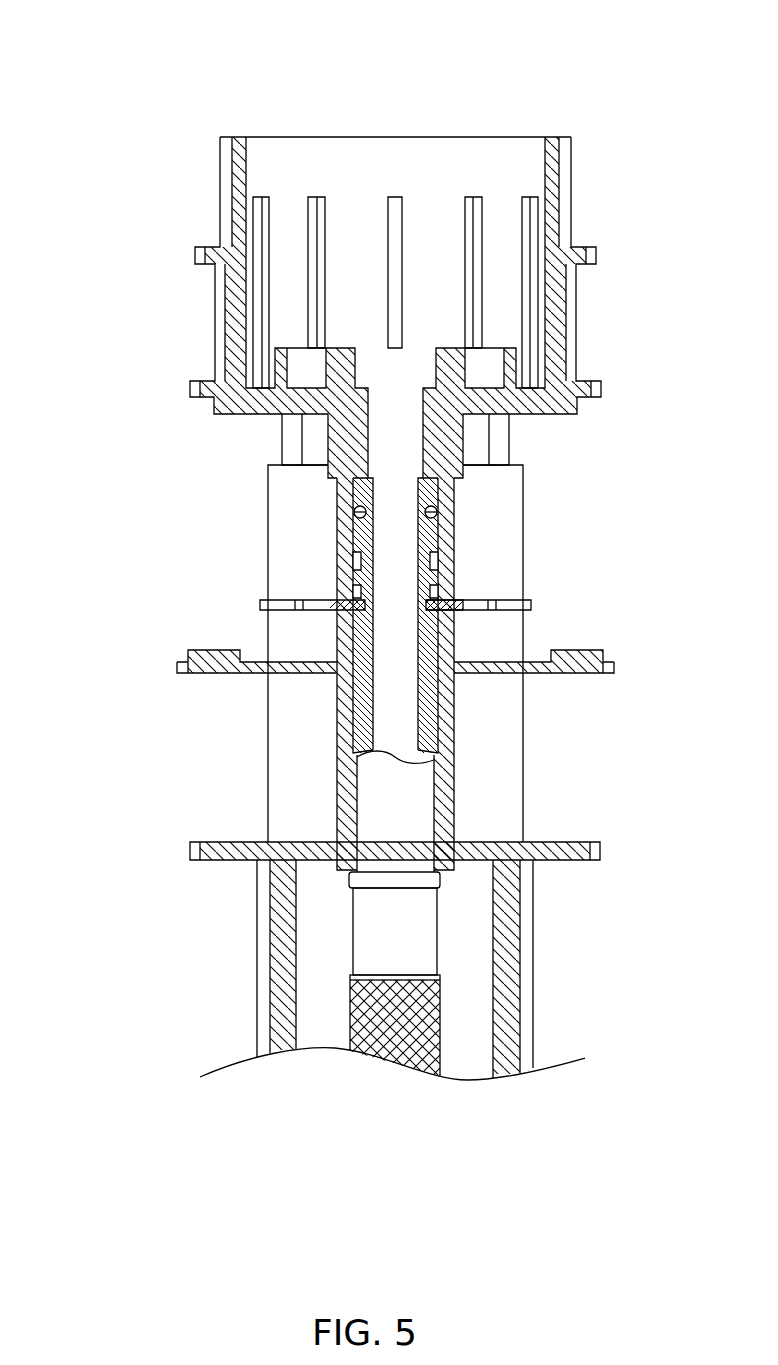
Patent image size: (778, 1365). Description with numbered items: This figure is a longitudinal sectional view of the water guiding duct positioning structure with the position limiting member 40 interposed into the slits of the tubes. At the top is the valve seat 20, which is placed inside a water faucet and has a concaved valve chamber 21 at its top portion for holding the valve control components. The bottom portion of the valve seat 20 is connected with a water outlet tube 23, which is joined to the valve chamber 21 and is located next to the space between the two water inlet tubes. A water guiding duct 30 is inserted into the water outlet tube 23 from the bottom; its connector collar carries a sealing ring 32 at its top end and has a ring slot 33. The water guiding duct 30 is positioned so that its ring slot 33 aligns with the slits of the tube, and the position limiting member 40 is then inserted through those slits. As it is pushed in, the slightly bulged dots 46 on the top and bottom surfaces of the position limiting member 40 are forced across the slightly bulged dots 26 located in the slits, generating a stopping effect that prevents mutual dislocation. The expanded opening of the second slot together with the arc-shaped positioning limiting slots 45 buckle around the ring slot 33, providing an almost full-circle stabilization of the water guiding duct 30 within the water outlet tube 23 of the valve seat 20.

The valve chamber 21 is at (433, 167).
The water outlet tube 23 is at (447, 765).
The sealing ring 32 is at (355, 498).
The ring slot 33 is at (428, 558).
The slightly bulged dots 26 is at (347, 562).
The slightly bulged dots 46 is at (343, 597).
The arc-shaped positioning limiting slot 45 is at (462, 605).
The position limiting member 40 is at (253, 604).
The valve seat 20 is at (250, 912).
The water guiding duct 30 is at (447, 937).